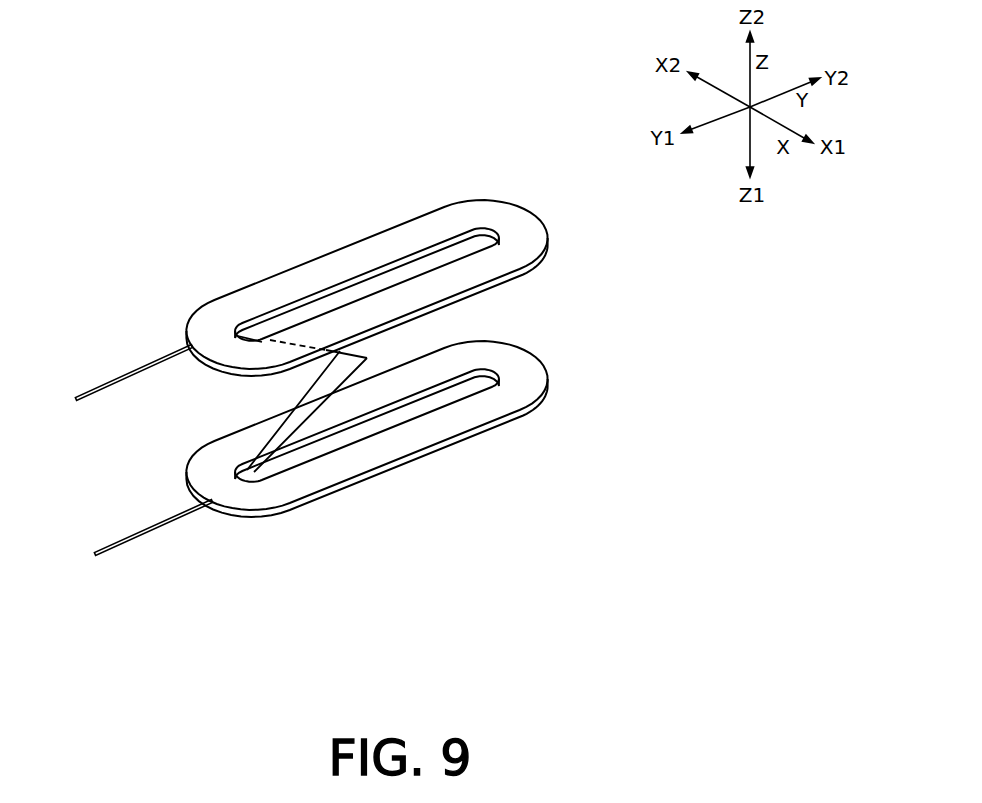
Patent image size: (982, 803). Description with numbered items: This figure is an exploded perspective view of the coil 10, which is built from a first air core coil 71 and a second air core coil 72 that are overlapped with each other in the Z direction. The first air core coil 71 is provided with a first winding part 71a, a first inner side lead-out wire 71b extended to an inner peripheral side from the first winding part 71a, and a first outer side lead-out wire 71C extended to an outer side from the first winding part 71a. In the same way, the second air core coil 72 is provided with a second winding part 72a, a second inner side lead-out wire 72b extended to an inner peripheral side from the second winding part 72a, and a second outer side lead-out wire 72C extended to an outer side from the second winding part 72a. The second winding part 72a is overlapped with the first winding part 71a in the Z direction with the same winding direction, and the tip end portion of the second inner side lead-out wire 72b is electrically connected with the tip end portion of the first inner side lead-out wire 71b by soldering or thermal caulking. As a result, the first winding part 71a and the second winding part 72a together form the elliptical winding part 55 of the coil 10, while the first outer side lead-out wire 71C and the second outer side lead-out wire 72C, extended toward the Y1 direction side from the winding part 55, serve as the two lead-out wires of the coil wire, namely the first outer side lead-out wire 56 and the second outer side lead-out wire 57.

The coil 10 is at (213, 260).
The winding part 55 is at (317, 176).
The first air core coil 71 is at (530, 352).
The second air core coil 72 is at (516, 207).
The first winding part 71a is at (446, 362).
The second winding part 72a is at (367, 262).
The first inner side lead-out wire 71b is at (292, 433).
The second inner side lead-out wire 72b is at (262, 342).
The first outer side lead-out wire 71C is at (125, 537).
The first outer side lead-out wire 56 is at (124, 521).
The second outer side lead-out wire 72C is at (95, 388).
The second outer side lead-out wire 57 is at (107, 366).